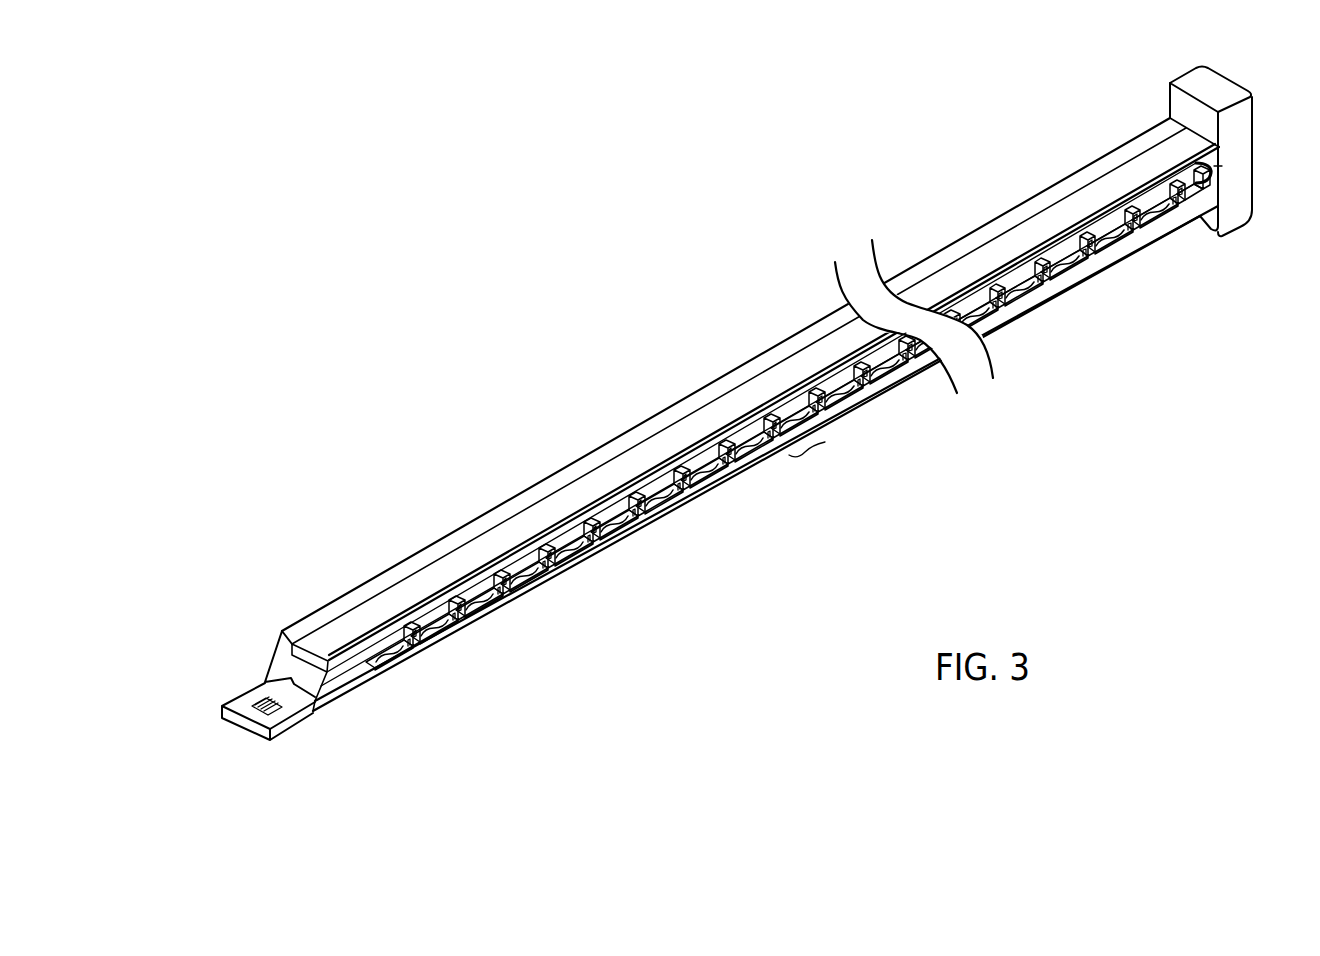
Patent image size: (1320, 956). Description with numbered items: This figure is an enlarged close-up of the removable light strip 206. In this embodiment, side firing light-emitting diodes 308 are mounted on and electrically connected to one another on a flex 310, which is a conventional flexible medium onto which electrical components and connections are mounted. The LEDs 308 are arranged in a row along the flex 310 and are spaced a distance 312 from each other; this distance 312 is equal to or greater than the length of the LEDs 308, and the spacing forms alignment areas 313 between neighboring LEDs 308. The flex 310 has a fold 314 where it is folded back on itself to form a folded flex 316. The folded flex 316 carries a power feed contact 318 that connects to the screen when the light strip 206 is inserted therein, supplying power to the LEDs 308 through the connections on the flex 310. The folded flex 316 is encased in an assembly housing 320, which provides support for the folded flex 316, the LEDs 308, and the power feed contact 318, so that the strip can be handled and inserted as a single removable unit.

The removable light strip 206 is at (285, 212).
The side firing light-emitting diodes 308 is at (1085, 243).
The flex 310 is at (650, 455).
The distance 312 is at (819, 462).
The alignment areas 313 is at (450, 588).
The fold 314 is at (1212, 212).
The folded flex 316 is at (1224, 165).
The power feed contact 318 is at (285, 735).
The assembly housing 320 is at (540, 598).